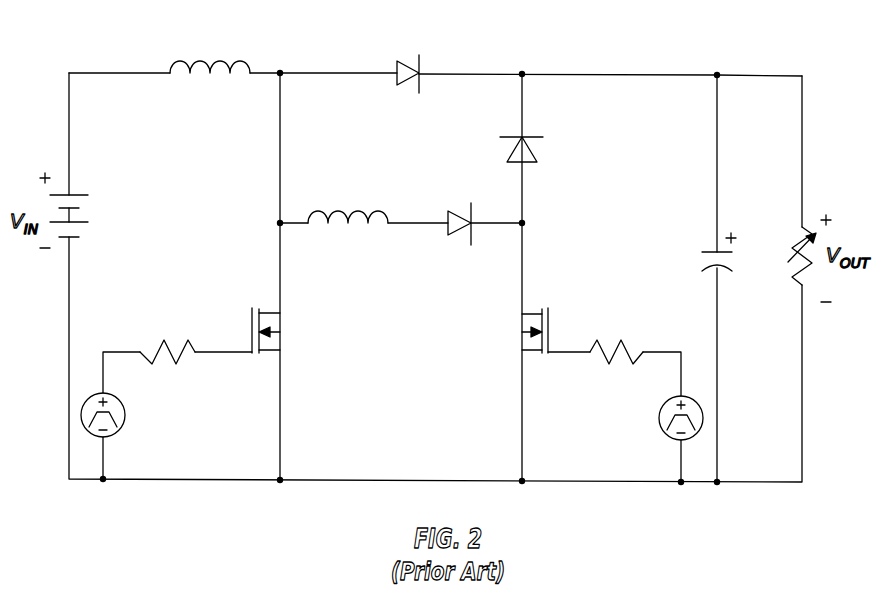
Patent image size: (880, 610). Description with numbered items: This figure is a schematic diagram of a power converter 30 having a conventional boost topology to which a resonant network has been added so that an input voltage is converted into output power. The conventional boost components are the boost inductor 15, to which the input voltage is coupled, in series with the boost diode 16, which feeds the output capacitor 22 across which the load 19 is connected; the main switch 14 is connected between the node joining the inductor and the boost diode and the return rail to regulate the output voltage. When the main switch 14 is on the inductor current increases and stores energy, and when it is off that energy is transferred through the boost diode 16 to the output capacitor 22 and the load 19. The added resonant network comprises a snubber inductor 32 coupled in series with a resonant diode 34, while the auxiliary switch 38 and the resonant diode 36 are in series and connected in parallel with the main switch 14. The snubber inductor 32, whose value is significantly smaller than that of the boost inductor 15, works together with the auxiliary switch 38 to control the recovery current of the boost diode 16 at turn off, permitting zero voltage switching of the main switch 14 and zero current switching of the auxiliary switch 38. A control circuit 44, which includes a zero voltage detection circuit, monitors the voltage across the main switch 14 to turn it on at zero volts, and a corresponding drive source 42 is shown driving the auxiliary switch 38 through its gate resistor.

The boost converter circuit 30 is at (742, 52).
The boost inductor 15 is at (215, 61).
The boost diode 16 is at (407, 62).
The snubber inductor 32 is at (355, 208).
The resonant diode 34 is at (456, 210).
The resonant diode 36 is at (537, 148).
The output capacitor 22 is at (708, 250).
The load 19 is at (795, 250).
The main switch 14 is at (283, 340).
The auxiliary switch 38 is at (520, 343).
The control circuit 44 is at (126, 415).
The pulse source 42 is at (658, 418).